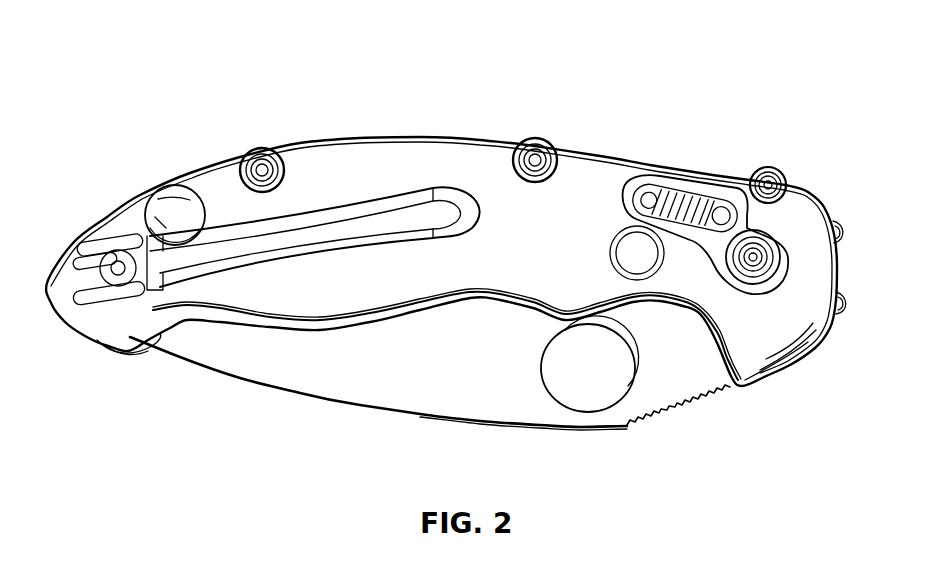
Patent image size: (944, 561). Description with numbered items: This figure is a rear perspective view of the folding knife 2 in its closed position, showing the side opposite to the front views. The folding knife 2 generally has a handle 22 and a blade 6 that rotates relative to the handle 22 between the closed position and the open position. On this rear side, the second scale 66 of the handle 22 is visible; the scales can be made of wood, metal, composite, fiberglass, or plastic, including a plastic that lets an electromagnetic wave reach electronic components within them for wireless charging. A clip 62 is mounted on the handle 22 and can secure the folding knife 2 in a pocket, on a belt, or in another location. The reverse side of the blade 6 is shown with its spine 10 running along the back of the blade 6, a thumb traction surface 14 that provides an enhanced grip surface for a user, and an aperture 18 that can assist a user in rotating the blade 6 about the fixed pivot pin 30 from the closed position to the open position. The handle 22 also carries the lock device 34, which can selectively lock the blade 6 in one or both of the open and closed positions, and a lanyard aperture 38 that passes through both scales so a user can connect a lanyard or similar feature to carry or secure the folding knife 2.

The folding knife 2 is at (95, 64).
The blade 6 is at (318, 378).
The spine 10 is at (240, 378).
The thumb traction surface 14 is at (693, 395).
The aperture 18 is at (580, 397).
The handle 22 is at (397, 137).
The fixed pivot pin 30 is at (767, 241).
The lock device 34 is at (680, 187).
The lanyard aperture 38 is at (167, 196).
The clip 62 is at (327, 210).
The second scale 66 is at (568, 195).